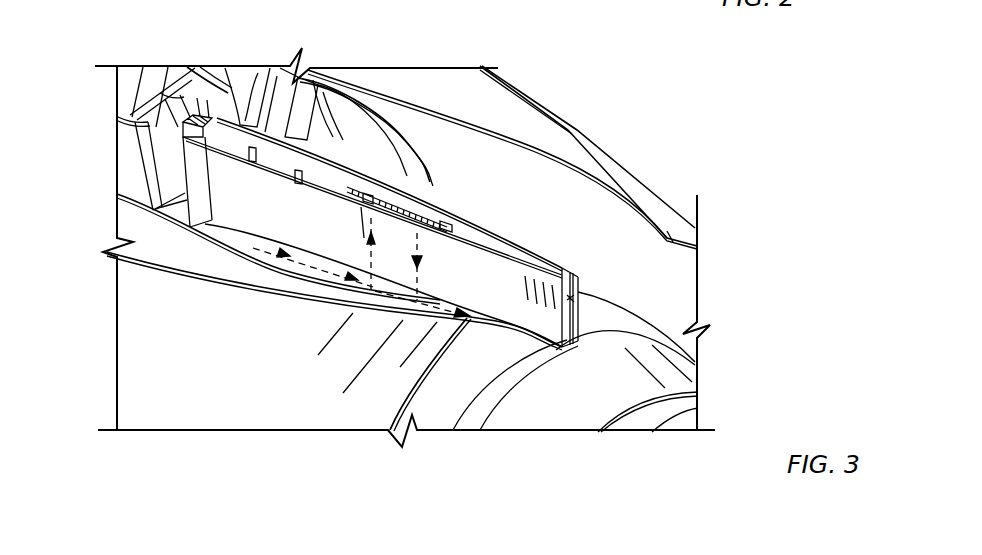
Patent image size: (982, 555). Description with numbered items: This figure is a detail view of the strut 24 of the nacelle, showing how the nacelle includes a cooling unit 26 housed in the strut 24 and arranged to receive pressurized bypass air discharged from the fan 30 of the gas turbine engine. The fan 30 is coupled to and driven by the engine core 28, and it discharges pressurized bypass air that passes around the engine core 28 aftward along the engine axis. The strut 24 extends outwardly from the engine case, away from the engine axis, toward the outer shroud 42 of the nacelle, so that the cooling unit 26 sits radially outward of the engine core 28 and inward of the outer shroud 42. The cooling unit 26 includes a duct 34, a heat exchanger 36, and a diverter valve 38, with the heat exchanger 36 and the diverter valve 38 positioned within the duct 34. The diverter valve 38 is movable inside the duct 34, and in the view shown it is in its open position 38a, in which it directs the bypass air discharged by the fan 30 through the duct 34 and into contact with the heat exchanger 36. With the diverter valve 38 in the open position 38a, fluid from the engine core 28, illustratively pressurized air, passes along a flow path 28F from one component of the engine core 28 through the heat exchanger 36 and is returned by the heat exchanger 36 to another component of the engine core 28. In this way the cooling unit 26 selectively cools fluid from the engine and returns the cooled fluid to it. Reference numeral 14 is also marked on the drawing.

The gas turbine engine 14 is at (705, 107).
The strut 24 is at (479, 211).
The cooling unit 26 is at (332, 162).
The engine core 28 is at (450, 358).
The flow path 28F is at (420, 277).
The fan 30 is at (217, 82).
The duct 34 is at (457, 224).
The heat exchanger 36 is at (419, 207).
The diverter valve 38 is at (346, 184).
The open position 38a is at (296, 186).
The outer shroud 42 is at (534, 112).